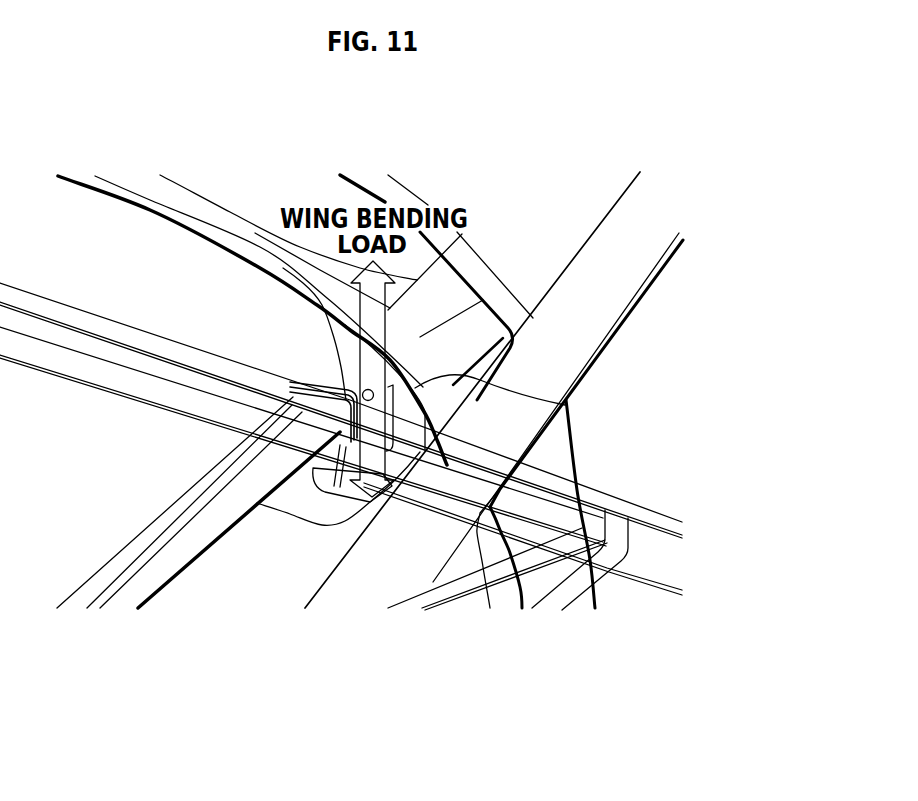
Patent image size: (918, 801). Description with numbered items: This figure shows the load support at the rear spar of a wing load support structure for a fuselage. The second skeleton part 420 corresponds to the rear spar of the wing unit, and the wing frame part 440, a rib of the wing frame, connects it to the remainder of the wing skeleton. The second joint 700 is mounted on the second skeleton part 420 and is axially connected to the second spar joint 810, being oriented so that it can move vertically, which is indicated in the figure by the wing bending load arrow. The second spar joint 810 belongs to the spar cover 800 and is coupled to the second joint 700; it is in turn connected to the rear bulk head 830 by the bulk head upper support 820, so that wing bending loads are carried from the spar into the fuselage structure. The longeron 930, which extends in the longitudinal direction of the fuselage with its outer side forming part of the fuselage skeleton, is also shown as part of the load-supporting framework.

The spar cover 800 is at (141, 233).
The second joint 700 is at (283, 268).
The rear bulk head 830 is at (395, 185).
The bulk head upper support 820 is at (467, 293).
The longeron 930 is at (610, 298).
The second spar joint 810 is at (570, 407).
The second skeleton part 420 is at (647, 517).
The wing frame part 440 is at (153, 575).